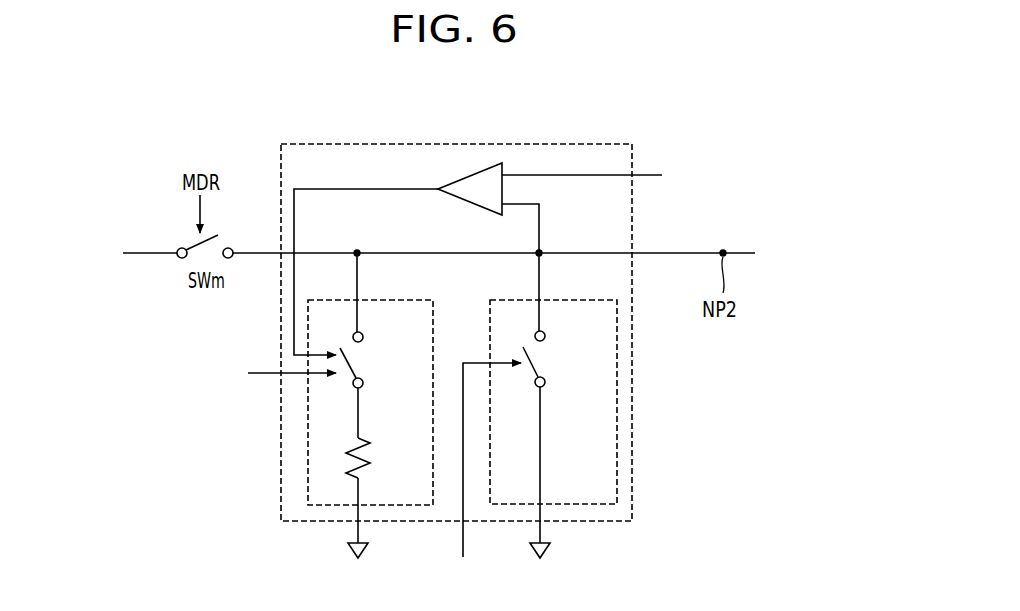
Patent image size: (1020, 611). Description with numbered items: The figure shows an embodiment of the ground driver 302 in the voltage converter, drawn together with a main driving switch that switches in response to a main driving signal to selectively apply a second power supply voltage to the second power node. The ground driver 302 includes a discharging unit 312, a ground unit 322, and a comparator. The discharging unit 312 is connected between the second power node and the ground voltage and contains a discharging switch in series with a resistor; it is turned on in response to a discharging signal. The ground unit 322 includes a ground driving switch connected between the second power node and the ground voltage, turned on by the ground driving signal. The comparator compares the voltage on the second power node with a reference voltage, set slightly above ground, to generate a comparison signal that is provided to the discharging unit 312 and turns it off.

The ground driver 302 is at (464, 366).
The discharging unit 312 is at (308, 456).
The ground unit 322 is at (617, 456).